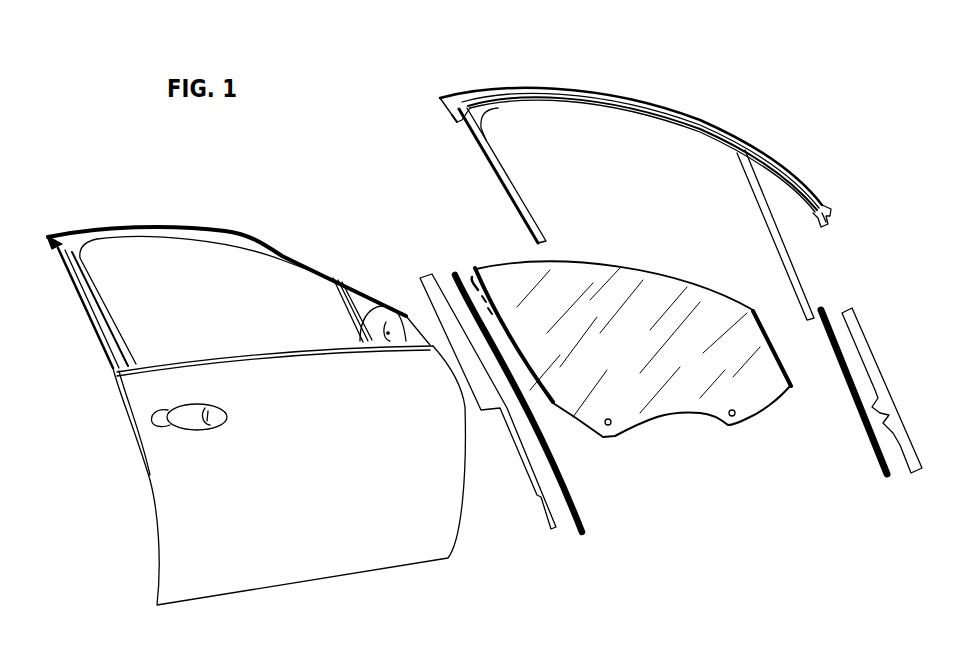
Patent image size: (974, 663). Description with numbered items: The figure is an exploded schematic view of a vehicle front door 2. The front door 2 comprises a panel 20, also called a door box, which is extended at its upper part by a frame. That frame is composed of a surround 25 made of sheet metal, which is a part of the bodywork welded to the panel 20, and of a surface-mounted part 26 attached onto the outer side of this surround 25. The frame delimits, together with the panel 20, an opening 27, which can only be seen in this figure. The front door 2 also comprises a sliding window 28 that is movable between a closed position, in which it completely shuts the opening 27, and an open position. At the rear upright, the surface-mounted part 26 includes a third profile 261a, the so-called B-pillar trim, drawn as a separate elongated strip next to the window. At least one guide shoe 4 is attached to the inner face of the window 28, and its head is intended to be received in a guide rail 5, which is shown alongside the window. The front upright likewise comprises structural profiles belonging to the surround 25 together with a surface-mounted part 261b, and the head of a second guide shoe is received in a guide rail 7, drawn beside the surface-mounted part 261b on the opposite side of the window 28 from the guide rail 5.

The front door 2 is at (693, 49).
The guide shoe 4 is at (462, 283).
The guide rail 5 is at (574, 482).
The guide rail 7 is at (827, 311).
The panel 20 is at (344, 547).
The surround 25 is at (253, 236).
The surface-mounted part 26 is at (516, 79).
The opening 27 is at (232, 314).
The sliding window 28 is at (661, 424).
The B-pillar trim 261a is at (425, 301).
The surface-mounted part 261b is at (878, 343).